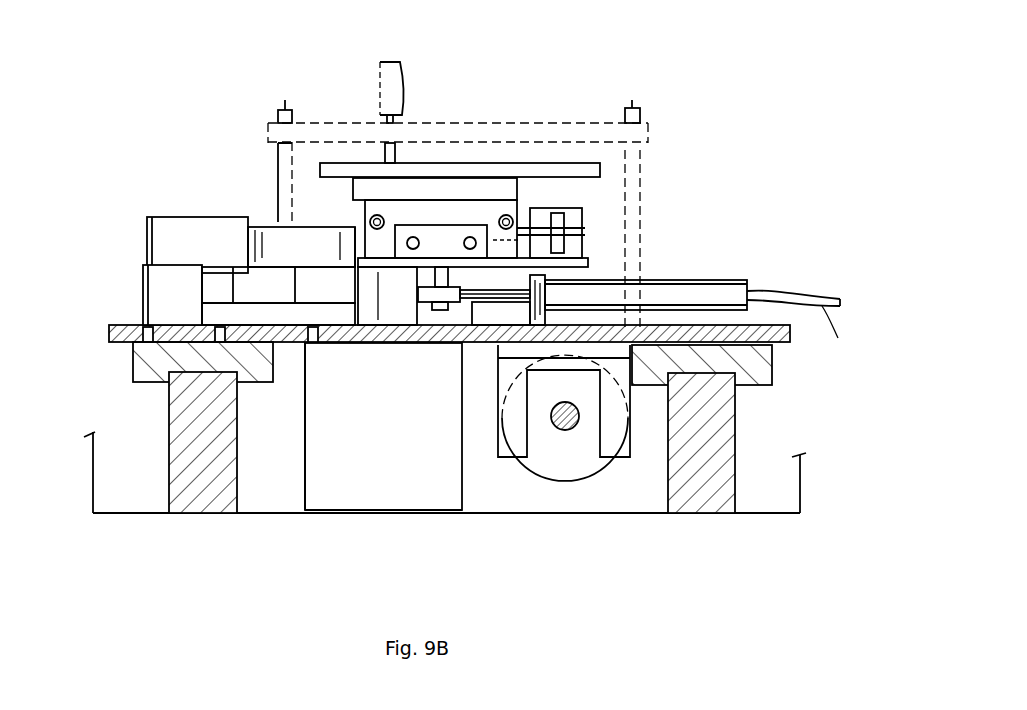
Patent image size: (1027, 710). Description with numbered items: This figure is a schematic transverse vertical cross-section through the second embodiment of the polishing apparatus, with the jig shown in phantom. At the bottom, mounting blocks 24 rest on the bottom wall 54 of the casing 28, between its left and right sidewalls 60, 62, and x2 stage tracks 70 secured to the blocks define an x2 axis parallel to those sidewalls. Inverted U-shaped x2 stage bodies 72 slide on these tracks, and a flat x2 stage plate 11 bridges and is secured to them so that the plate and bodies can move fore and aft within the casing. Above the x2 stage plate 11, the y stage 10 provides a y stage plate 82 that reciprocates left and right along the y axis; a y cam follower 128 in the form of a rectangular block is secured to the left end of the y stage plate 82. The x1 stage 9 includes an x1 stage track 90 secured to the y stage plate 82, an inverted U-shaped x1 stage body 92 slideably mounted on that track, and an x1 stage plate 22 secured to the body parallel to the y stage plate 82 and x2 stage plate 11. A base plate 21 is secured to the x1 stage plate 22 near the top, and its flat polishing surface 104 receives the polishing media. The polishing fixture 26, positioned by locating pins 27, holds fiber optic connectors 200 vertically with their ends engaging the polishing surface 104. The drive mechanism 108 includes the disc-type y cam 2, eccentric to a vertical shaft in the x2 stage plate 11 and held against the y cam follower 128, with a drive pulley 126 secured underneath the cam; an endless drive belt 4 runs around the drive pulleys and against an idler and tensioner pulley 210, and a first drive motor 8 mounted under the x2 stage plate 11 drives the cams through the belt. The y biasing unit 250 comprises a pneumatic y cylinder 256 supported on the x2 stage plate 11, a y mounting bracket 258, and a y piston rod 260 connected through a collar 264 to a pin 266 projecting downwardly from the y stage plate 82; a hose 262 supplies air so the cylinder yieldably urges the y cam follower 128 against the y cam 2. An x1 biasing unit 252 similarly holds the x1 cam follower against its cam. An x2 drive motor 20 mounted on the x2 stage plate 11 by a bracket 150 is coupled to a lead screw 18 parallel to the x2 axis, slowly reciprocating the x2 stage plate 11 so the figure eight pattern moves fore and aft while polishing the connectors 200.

The y cam 2 is at (202, 230).
The drive pulley 126 is at (220, 290).
The y cam follower 128 is at (307, 225).
The x1 stage 9 is at (350, 205).
The idler and tensioner pulley 210 is at (143, 287).
The x2 stage plate 11 is at (110, 327).
The x2 stage body 72 is at (132, 363).
The x2 stage track 70 is at (178, 395).
The endless drive belt 4 is at (285, 312).
The collar 264 is at (420, 287).
The left sidewall 60 is at (93, 470).
The mounting block 24 is at (188, 493).
The first drive motor 8 is at (303, 492).
The bottom wall 54 is at (300, 495).
The drive mechanism 108 is at (385, 520).
The y piston rod 260 is at (470, 326).
The pin 266 is at (440, 310).
The lead screw 18 is at (567, 430).
The x2 drive motor 20 is at (593, 478).
The bracket 150 is at (628, 457).
The casing 28 is at (800, 515).
The right sidewall 62 is at (802, 477).
The pneumatic y cylinder 256 is at (702, 310).
The hose 262 is at (838, 338).
The y biasing unit 250 is at (790, 232).
The y stage 10 is at (735, 258).
The y stage plate 82 is at (600, 270).
The x1 biasing unit 252 is at (600, 215).
The x1 stage plate 22 is at (517, 190).
The base plate 21 is at (600, 172).
The polishing fixture 26 is at (650, 133).
The locating pin 27 is at (280, 100).
The fiber optic connector 200 is at (380, 62).
The x1 stage body 92 is at (432, 200).
The polishing surface 104 is at (457, 163).
The x1 stage track 90 is at (463, 233).
The y mounting bracket 258 is at (526, 316).